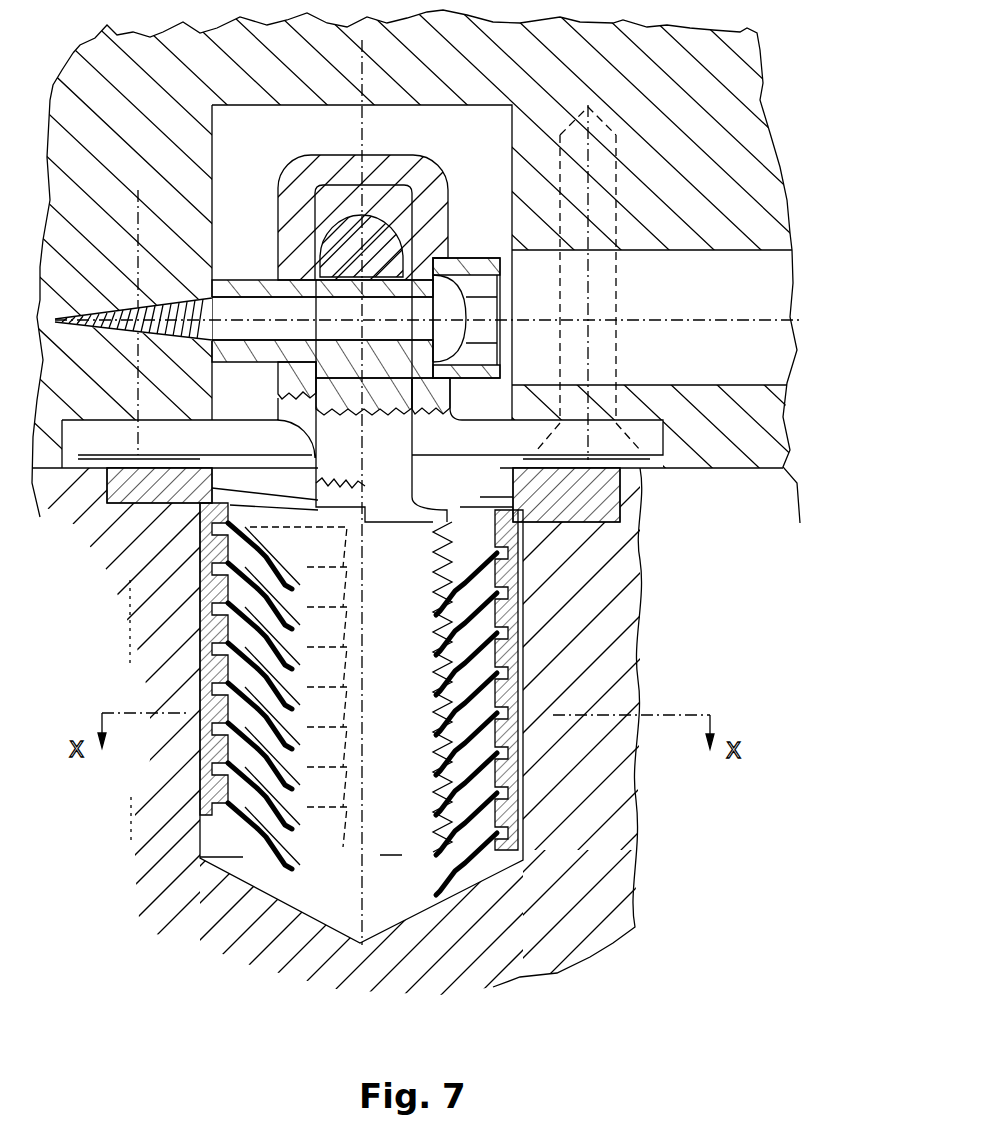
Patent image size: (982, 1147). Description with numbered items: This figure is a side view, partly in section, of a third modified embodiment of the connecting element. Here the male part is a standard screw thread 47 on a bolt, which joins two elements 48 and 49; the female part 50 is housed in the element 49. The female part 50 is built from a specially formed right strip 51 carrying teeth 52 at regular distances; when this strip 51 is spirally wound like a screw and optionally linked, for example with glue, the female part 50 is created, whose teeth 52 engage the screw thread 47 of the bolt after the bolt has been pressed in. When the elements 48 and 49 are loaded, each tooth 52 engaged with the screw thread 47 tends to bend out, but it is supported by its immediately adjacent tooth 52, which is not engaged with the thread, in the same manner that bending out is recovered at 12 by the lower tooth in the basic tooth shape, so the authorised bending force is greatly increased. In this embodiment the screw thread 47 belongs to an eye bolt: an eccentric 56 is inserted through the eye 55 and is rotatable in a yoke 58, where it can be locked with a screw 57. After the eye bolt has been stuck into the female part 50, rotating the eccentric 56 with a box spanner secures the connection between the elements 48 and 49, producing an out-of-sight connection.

The bending recovery point 12 is at (507, 813).
The screw thread 47 is at (403, 840).
The element 48 is at (742, 163).
The element 49 is at (617, 615).
The female part 50 is at (295, 602).
The strip 51 is at (205, 560).
The teeth 52 is at (240, 770).
The eye 55 is at (385, 228).
The eccentric 56 is at (452, 272).
The screw 57 is at (218, 278).
The yoke 58 is at (413, 163).